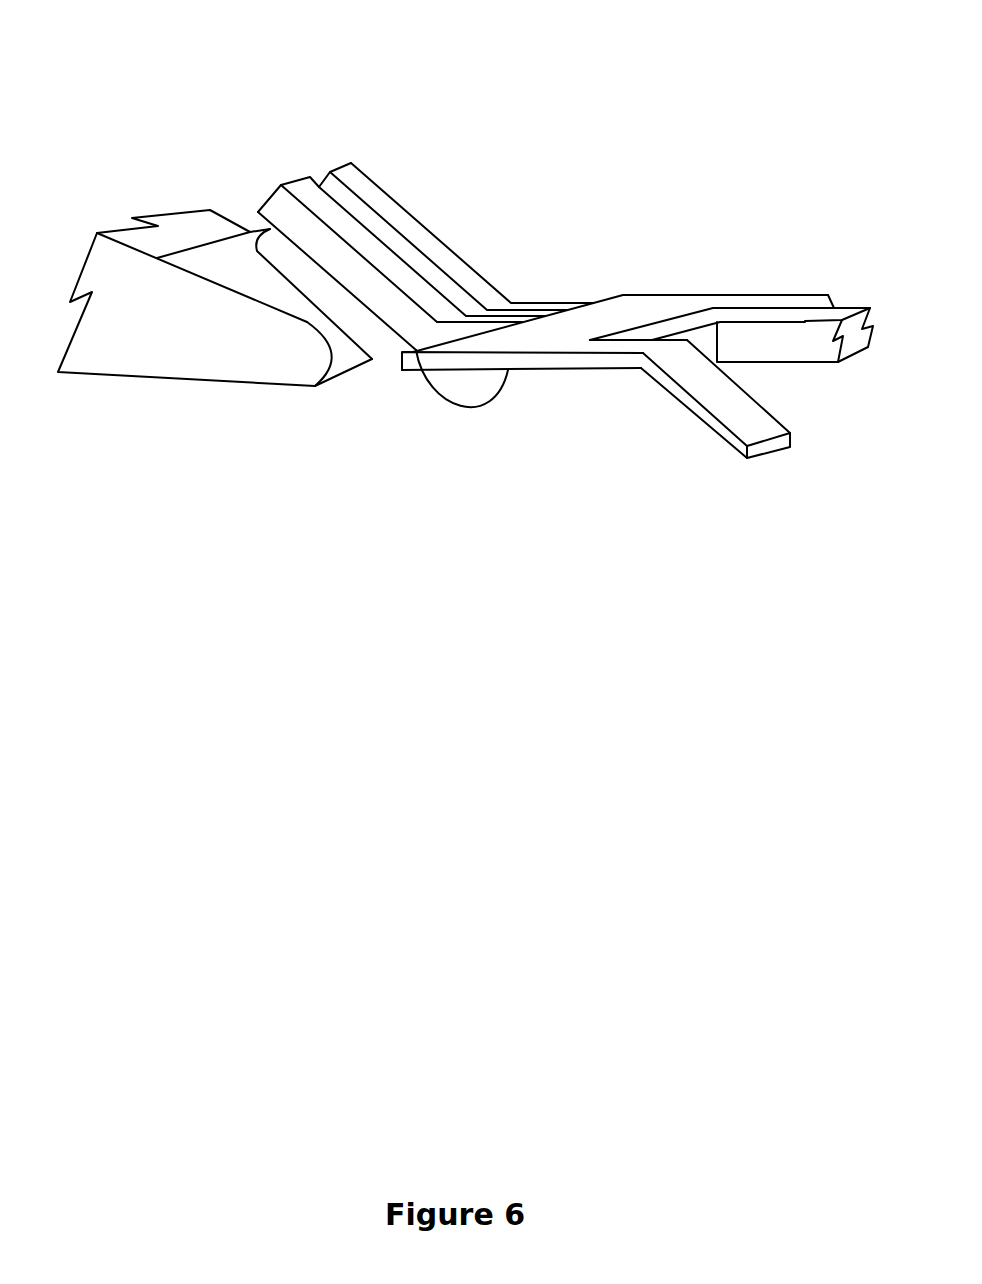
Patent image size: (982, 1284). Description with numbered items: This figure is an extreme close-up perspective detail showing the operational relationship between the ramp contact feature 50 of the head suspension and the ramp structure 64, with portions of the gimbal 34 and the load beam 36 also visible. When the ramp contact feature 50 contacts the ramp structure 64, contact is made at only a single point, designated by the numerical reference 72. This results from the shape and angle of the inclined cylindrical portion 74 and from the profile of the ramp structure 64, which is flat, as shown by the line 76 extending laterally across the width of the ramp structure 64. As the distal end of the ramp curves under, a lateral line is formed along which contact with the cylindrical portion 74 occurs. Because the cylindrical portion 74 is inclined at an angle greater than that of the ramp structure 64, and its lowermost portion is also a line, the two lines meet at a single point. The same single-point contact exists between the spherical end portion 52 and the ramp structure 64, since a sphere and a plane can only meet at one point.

The ramp contact feature 50 is at (338, 95).
The line 76 is at (207, 240).
The inclined cylindrical portion 74 is at (313, 283).
The gimbal 34 is at (638, 303).
The load beam 36 is at (850, 303).
The ramp structure 64 is at (202, 355).
The single point of contact 72 is at (348, 337).
The spherical end portion 52 is at (463, 407).